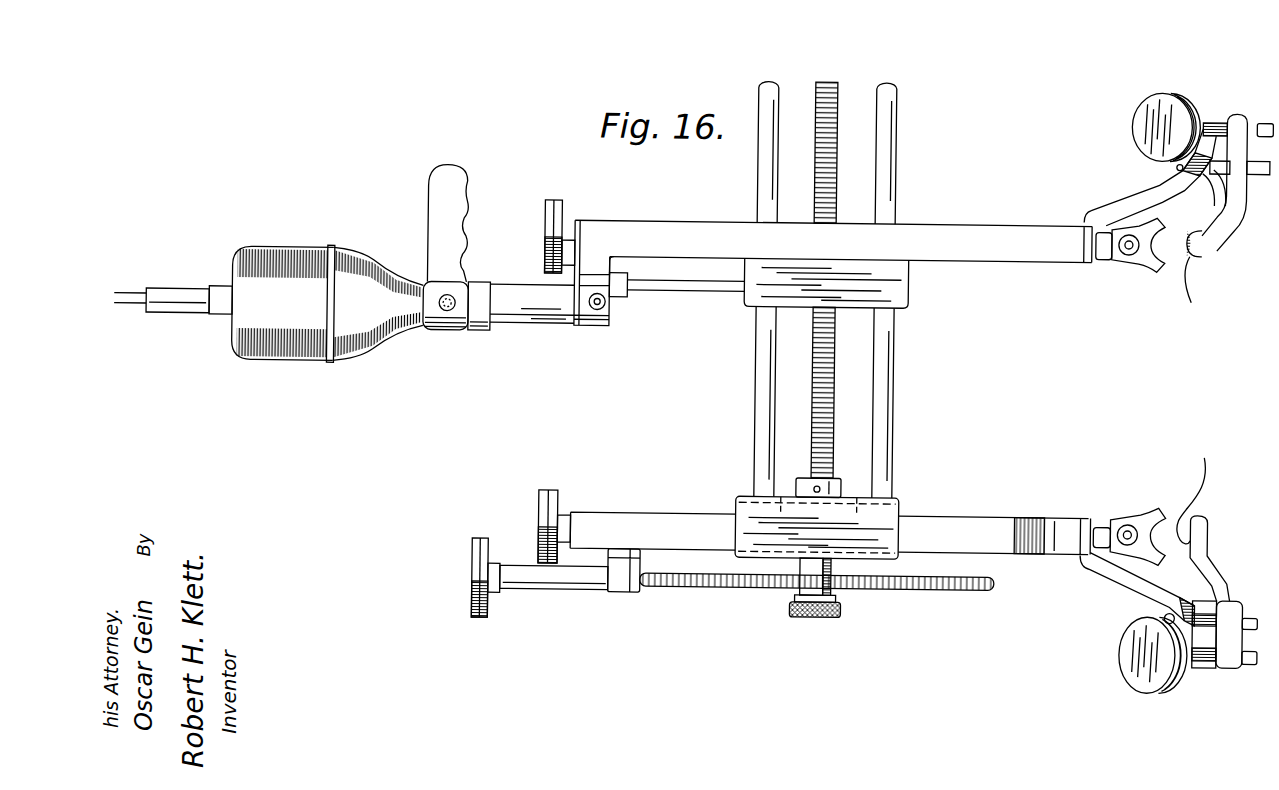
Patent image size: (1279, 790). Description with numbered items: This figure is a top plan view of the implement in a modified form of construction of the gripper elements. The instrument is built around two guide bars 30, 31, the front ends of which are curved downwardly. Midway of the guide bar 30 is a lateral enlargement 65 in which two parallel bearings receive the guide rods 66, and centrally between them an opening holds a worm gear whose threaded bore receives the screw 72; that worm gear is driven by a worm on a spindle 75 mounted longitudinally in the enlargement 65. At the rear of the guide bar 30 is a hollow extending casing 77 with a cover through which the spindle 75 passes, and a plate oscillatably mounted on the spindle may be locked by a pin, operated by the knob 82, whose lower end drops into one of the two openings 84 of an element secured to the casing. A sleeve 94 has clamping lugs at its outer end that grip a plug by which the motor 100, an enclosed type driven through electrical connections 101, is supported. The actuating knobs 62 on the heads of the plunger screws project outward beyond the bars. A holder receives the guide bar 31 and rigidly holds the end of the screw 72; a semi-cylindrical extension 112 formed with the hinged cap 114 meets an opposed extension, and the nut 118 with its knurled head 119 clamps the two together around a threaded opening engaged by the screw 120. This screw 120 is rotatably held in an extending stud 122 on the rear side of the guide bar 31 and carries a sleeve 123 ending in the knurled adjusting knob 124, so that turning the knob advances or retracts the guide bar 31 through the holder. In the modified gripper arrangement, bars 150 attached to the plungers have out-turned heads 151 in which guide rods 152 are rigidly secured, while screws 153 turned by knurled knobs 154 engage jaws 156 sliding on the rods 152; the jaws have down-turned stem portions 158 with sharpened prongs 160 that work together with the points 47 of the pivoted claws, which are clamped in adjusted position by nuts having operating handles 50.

The guide bar 30 is at (686, 242).
The guide bar 31 is at (673, 516).
The points 47 is at (1158, 268).
The operating handles 50 is at (1103, 248).
The actuating knobs 62 is at (558, 218).
The lateral enlargement 65 is at (896, 289).
The guide rods 66 is at (881, 82).
The screw 72 is at (828, 135).
The spindle 75 is at (707, 293).
The hollow extending casing 77 is at (590, 275).
The knob 82 is at (605, 328).
The openings 84 is at (598, 304).
The sleeve 94 is at (531, 301).
The motor 100 is at (290, 364).
The electrical connections 101 is at (127, 320).
The semi-cylindrical extension 112 is at (803, 598).
The cap 114 is at (881, 524).
The nut 118 is at (848, 603).
The knurled head 119 is at (818, 622).
The screw 120 is at (947, 588).
The extending stud 122 is at (628, 602).
The sleeve 123 is at (566, 593).
The knurled adjusting knob 124 is at (476, 601).
The bars 150 is at (1134, 196).
The out-turned heads 151 is at (1206, 112).
The guide rods 152 is at (1256, 172).
The screws 153 is at (1259, 116).
The knurled knobs 154 is at (1147, 91).
The jaws 156 is at (1232, 235).
The down-turned stem portions 158 is at (1211, 217).
The sharpened prongs 160 is at (1202, 388).